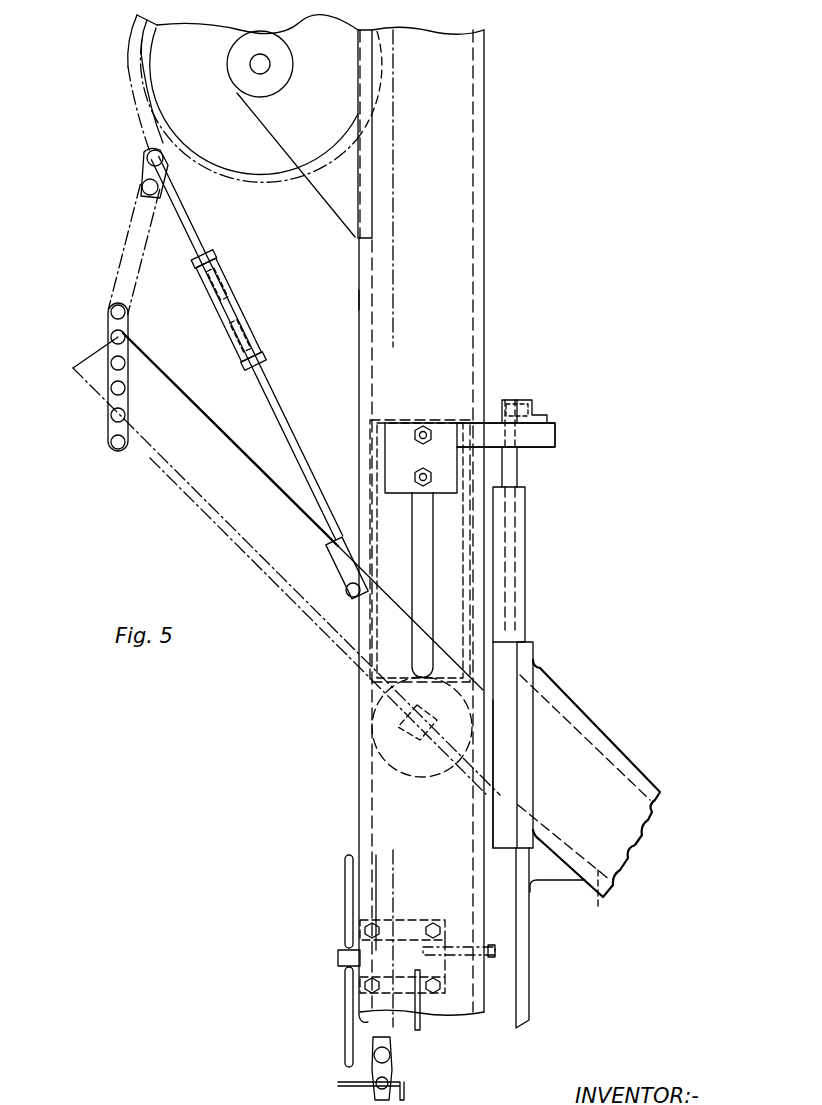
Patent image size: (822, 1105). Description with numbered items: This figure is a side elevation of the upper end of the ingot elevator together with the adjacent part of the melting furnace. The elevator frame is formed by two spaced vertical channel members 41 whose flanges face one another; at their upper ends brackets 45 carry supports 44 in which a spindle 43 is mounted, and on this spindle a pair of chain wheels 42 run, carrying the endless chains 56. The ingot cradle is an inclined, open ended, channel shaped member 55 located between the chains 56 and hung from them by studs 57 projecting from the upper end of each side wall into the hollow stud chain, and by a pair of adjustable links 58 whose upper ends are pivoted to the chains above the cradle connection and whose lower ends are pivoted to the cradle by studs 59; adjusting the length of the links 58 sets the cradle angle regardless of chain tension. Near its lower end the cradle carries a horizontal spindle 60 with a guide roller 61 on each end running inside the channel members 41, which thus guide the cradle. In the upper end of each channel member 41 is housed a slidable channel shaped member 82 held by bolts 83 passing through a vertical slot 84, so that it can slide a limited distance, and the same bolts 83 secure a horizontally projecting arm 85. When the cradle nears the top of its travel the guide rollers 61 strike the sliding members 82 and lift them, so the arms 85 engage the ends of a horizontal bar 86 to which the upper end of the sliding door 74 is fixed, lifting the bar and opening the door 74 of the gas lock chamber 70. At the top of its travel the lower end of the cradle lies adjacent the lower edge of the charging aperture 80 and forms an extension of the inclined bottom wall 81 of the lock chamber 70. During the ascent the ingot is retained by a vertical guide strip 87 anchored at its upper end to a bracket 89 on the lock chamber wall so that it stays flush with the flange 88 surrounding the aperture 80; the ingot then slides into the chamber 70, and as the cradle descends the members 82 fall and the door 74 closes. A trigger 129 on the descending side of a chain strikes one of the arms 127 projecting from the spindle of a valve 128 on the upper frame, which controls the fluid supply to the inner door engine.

The channel members 41 is at (357, 298).
The chain wheels 42 is at (253, 190).
The spindle 43 is at (260, 62).
The supports 44 is at (250, 88).
The brackets 45 is at (330, 190).
The channel shaped member 55 is at (203, 430).
The chains 56 is at (111, 441).
The studs 57 is at (112, 338).
The adjustable links 58 is at (263, 387).
The studs 59 is at (350, 590).
The horizontal spindle 60 is at (418, 740).
The guide roller 61 is at (433, 750).
The gas lock chamber 70 is at (578, 753).
The sliding door 74 is at (510, 467).
The charging aperture 80 is at (528, 768).
The inclined bottom wall 81 is at (612, 901).
The channel shaped member 82 is at (377, 450).
The bolts 83 is at (421, 424).
The vertical slot 84 is at (433, 573).
The horizontally projecting arm 85 is at (533, 432).
The horizontal bar 86 is at (535, 413).
The vertical guide strip 87 is at (523, 992).
The flange 88 is at (525, 832).
The bracket 89 is at (562, 872).
The arms 127 is at (348, 902).
The valve 128 is at (390, 963).
The trigger 129 is at (398, 1087).